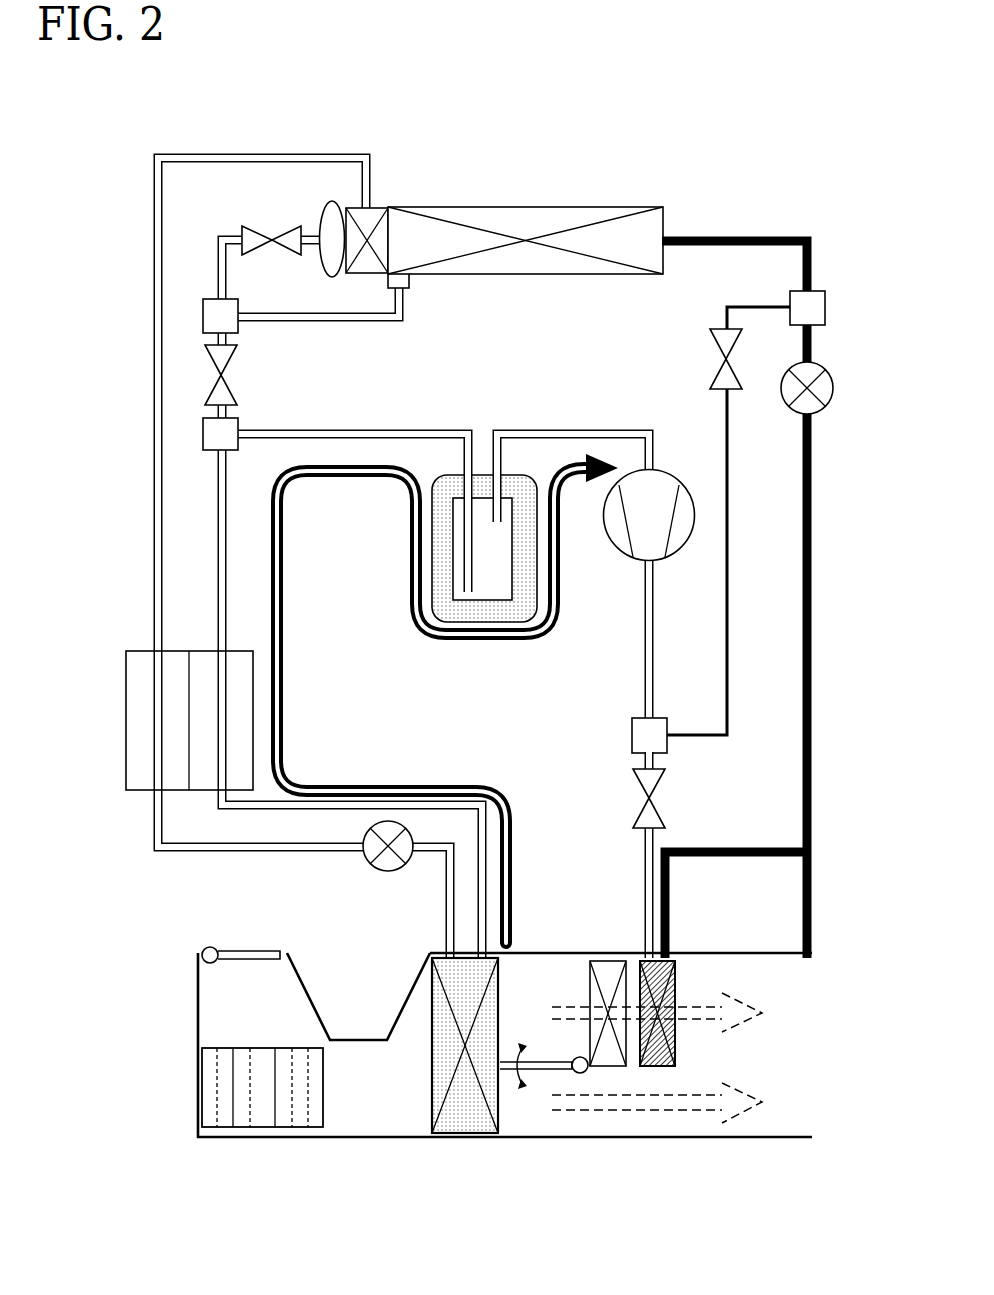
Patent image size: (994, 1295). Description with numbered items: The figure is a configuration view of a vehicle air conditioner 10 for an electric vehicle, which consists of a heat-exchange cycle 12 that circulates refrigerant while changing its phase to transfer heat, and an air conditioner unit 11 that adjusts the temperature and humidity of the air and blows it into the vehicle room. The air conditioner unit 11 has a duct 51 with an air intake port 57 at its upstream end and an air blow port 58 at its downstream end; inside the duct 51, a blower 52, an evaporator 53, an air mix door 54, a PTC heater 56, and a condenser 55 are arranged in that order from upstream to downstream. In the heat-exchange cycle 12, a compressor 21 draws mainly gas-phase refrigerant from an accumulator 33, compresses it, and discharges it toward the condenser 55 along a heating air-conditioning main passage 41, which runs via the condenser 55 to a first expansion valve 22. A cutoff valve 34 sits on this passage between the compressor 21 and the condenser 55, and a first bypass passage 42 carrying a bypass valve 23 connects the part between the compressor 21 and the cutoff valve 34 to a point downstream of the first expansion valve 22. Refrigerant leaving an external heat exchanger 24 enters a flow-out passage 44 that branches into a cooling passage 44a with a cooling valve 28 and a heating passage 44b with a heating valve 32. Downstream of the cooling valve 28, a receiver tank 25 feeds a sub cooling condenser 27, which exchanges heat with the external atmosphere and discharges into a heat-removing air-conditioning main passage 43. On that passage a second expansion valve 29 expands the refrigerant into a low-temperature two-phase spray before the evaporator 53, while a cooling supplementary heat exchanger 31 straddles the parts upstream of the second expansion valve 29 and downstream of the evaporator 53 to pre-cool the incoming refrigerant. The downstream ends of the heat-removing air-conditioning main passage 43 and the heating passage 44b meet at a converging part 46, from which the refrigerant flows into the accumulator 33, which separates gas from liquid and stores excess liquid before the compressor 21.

The vehicle air conditioner 10 is at (688, 145).
The air conditioner unit 11 is at (700, 1150).
The heat-exchange cycle 12 is at (824, 540).
The compressor 21 is at (622, 548).
The first expansion valve 22 is at (832, 391).
The bypass valve 23 is at (718, 361).
The external heat exchanger 24 is at (546, 207).
The receiver tank 25 is at (322, 263).
The sub cooling condenser 27 is at (370, 208).
The cooling valve 28 is at (268, 233).
The second expansion valve 29 is at (378, 870).
The cooling supplementary heat exchanger 31 is at (126, 702).
The heating valve 32 is at (228, 375).
The accumulator 33 is at (447, 500).
The cutoff valve 34 is at (656, 794).
The heating air-conditioning main passage 41 is at (812, 665).
The first bypass passage 42 is at (725, 612).
The heat-removing air-conditioning main passage 43 is at (154, 418).
The flow-out passage 44 is at (338, 321).
The cooling passage 44a is at (218, 248).
The heating passage 44b is at (203, 337).
The converging part 46 is at (211, 451).
The duct 51 is at (374, 1139).
The blower 52 is at (262, 1118).
The evaporator 53 is at (478, 1125).
The air mix door 54 is at (546, 1070).
The condenser 55 is at (658, 1066).
The PTC heater 56 is at (609, 961).
The air intake port 57 is at (283, 952).
The air blow port 58 is at (802, 1137).